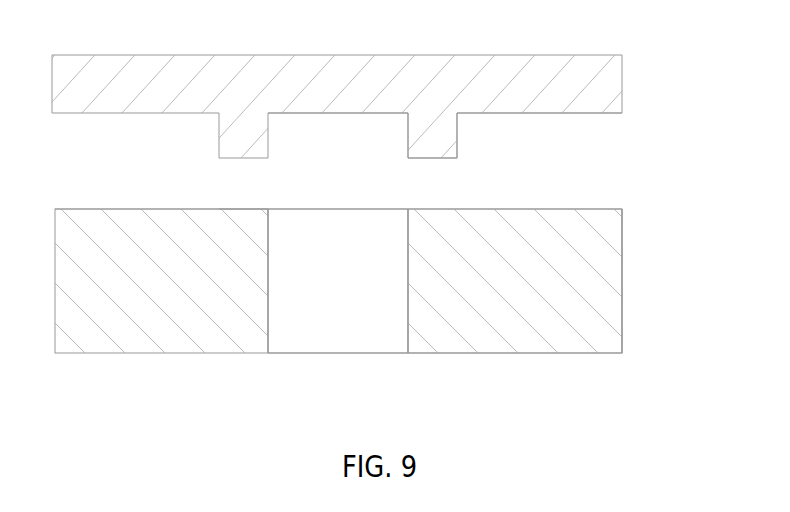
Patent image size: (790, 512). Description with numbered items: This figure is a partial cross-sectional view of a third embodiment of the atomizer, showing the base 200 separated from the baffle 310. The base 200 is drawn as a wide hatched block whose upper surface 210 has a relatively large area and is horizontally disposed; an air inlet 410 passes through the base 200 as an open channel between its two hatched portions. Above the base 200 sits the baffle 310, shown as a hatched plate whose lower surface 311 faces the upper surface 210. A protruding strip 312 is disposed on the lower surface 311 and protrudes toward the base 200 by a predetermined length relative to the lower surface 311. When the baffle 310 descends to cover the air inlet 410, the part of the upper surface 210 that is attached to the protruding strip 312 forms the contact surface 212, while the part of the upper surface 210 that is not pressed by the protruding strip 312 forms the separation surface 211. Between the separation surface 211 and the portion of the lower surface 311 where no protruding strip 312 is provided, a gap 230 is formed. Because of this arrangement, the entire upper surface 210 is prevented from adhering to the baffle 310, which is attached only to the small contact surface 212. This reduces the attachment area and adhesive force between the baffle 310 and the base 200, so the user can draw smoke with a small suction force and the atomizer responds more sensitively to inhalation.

The baffle 310 is at (608, 102).
The lower surface 311 is at (338, 113).
The protruding strip 312 is at (428, 138).
The base 200 is at (178, 333).
The upper surface 210 is at (492, 209).
The separation surface 211 is at (172, 209).
The contact surface 212 is at (248, 209).
The gap 230 is at (583, 177).
The air inlet 410 is at (350, 340).